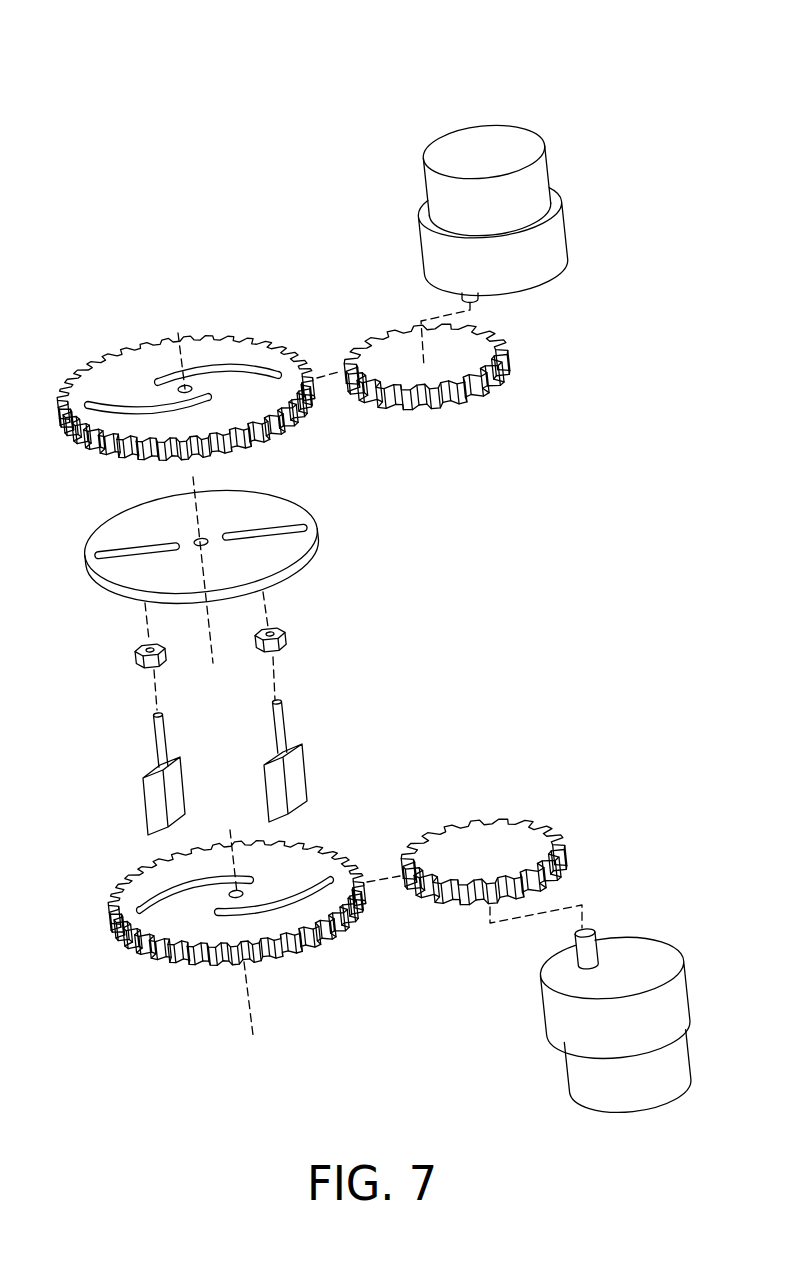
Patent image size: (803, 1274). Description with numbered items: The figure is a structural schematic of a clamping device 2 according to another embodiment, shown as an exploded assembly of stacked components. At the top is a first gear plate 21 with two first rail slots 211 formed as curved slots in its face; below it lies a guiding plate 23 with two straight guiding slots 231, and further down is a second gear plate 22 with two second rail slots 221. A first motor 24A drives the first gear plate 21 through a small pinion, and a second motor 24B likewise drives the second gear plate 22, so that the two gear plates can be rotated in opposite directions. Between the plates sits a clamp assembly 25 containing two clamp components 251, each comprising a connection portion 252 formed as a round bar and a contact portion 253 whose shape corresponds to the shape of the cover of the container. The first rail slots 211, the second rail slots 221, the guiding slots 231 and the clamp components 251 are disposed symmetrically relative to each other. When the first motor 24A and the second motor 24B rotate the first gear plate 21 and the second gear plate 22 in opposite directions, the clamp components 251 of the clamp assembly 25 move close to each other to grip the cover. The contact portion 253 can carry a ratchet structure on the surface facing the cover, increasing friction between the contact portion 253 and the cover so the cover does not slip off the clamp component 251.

The clamping device 2 is at (296, 88).
The first gear plate 21 is at (102, 385).
The first rail slots 211 is at (220, 365).
The second gear plate 22 is at (138, 893).
The second rail slots 221 is at (320, 895).
The guiding plate 23 is at (112, 540).
The guiding slots 231 is at (277, 525).
The first motor 24A is at (447, 142).
The second motor 24B is at (640, 948).
The clamp assembly 25 is at (355, 722).
The clamp components 251 is at (318, 720).
The connection portion 252 is at (160, 740).
The contact portion 253 is at (153, 807).